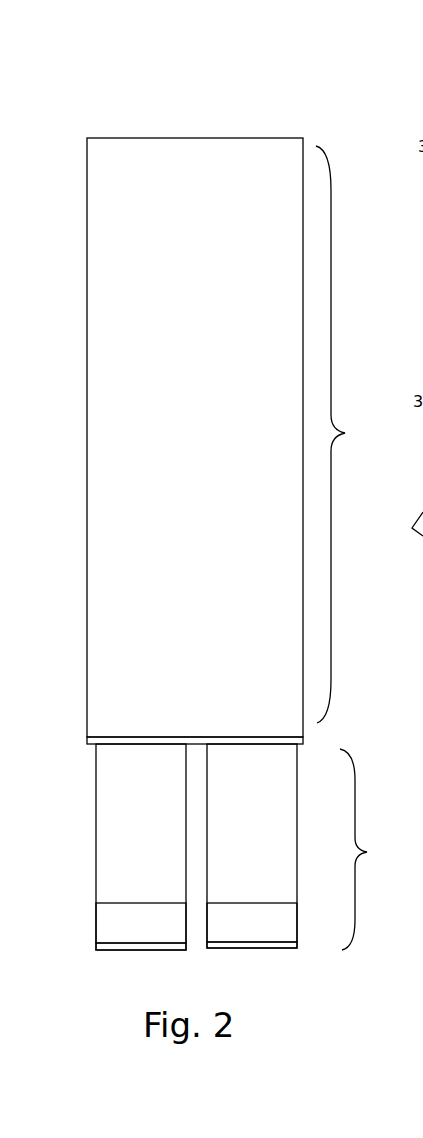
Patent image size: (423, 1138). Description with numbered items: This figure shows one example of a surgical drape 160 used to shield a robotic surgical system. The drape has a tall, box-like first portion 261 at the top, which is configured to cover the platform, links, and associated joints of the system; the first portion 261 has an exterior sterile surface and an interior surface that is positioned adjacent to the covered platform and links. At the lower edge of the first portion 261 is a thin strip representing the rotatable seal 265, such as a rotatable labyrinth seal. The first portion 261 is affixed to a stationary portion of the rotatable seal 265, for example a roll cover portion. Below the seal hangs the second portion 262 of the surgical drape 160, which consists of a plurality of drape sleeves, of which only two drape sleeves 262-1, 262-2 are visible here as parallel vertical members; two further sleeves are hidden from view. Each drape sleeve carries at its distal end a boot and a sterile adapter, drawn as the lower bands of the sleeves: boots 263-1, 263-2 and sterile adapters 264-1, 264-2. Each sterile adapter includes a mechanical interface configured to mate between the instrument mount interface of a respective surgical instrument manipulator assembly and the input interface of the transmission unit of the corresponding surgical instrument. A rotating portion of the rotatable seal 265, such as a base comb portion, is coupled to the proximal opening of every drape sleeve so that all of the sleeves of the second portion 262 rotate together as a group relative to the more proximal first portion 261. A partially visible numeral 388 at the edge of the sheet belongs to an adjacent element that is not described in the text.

The surgical drape 160 is at (172, 62).
The first portion 261 is at (355, 434).
The rotatable seal 265 is at (87, 742).
The second portion 262 is at (374, 849).
The drape sleeve 262-1 is at (113, 826).
The drape sleeve 262-2 is at (333, 827).
The boot 263-1 is at (100, 915).
The boot 263-2 is at (288, 925).
The sterile adapter 264-1 is at (115, 950).
The sterile adapter 264-2 is at (247, 945).
The adjacent component 388 is at (420, 300).